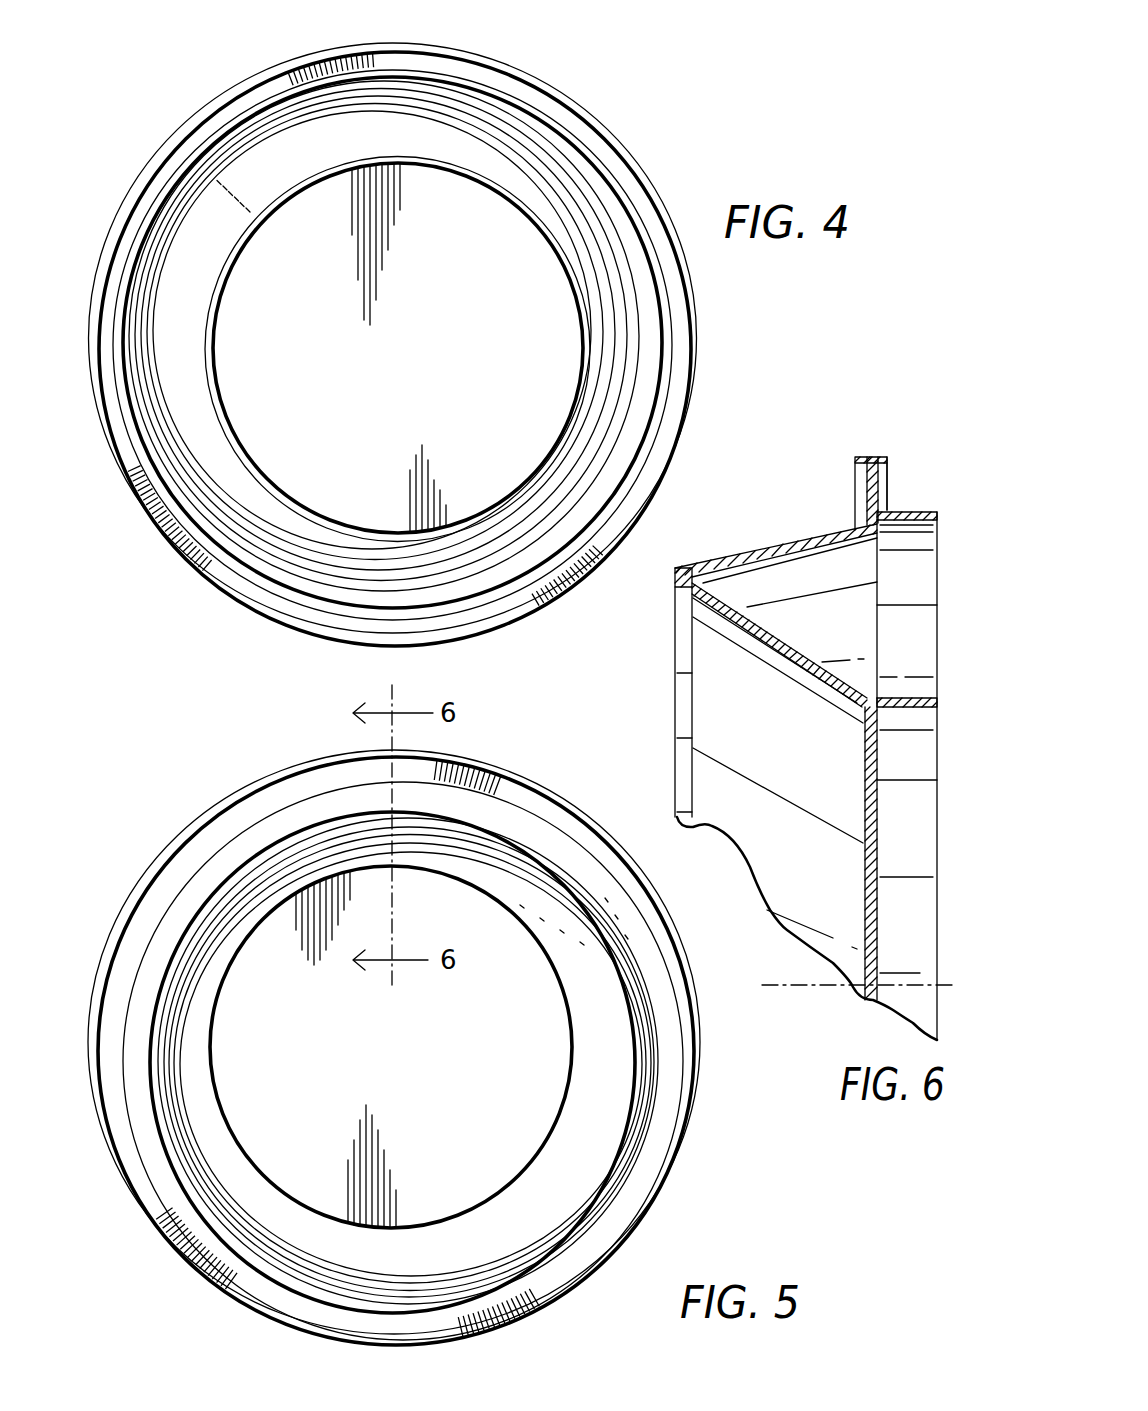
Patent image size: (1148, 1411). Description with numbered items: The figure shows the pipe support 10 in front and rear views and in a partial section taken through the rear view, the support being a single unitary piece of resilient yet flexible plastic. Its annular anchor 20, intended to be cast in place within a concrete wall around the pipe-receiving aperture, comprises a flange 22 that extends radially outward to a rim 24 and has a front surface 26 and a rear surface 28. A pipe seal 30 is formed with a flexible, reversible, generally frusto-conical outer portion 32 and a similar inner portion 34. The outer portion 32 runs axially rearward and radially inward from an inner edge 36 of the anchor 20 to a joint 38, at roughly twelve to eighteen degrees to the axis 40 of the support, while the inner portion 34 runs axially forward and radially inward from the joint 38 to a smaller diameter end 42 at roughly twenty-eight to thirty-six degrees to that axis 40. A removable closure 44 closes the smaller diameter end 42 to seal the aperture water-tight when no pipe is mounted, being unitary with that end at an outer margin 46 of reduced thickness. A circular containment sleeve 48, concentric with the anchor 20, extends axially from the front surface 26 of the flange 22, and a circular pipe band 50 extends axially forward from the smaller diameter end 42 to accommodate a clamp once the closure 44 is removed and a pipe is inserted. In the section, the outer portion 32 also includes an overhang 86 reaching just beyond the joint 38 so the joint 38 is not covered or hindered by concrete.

In FIG. 4, the pipe support 10 is at (119, 194).
In FIG. 5, the pipe support 10 is at (156, 843).
In FIG. 6, the pipe support 10 is at (897, 441).
In FIG. 4, the annular anchor 20 is at (622, 126).
In FIG. 5, the annular anchor 20 is at (680, 1170).
In FIG. 6, the annular anchor 20 is at (854, 458).
In FIG. 4, the flange 22 is at (627, 191).
In FIG. 5, the flange 22 is at (650, 1166).
In FIG. 6, the flange 22 is at (890, 497).
In FIG. 4, the rim 24 is at (698, 293).
In FIG. 5, the rim 24 is at (668, 1200).
In FIG. 6, the rim 24 is at (876, 455).
In FIG. 4, the front surface 26 is at (666, 232).
In FIG. 5, the rear surface 28 is at (557, 822).
In FIG. 4, the pipe seal 30 is at (645, 377).
In FIG. 5, the pipe seal 30 is at (565, 1240).
In FIG. 4, the outer portion 32 is at (640, 440).
In FIG. 5, the outer portion 32 is at (597, 1208).
In FIG. 6, the outer portion 32 is at (798, 546).
In FIG. 4, the inner portion 34 is at (590, 453).
In FIG. 5, the inner portion 34 is at (560, 1160).
In FIG. 6, the inner portion 34 is at (772, 642).
In FIG. 6, the inner edge 36 is at (870, 545).
In FIG. 5, the joint 38 is at (545, 1263).
In FIG. 6, the joint 38 is at (682, 627).
In FIG. 6, the axis 40 is at (785, 985).
In FIG. 5, the smaller diameter end 42 is at (250, 1145).
In FIG. 6, the smaller diameter end 42 is at (847, 712).
In FIG. 4, the removable closure 44 is at (548, 368).
In FIG. 5, the removable closure 44 is at (542, 1058).
In FIG. 6, the removable closure 44 is at (878, 848).
In FIG. 6, the outer margin 46 is at (880, 707).
In FIG. 4, the containment sleeve 48 is at (228, 122).
In FIG. 6, the containment sleeve 48 is at (920, 510).
In FIG. 4, the pipe band 50 is at (208, 304).
In FIG. 6, the pipe band 50 is at (910, 698).
In FIG. 6, the overhang 86 is at (685, 591).